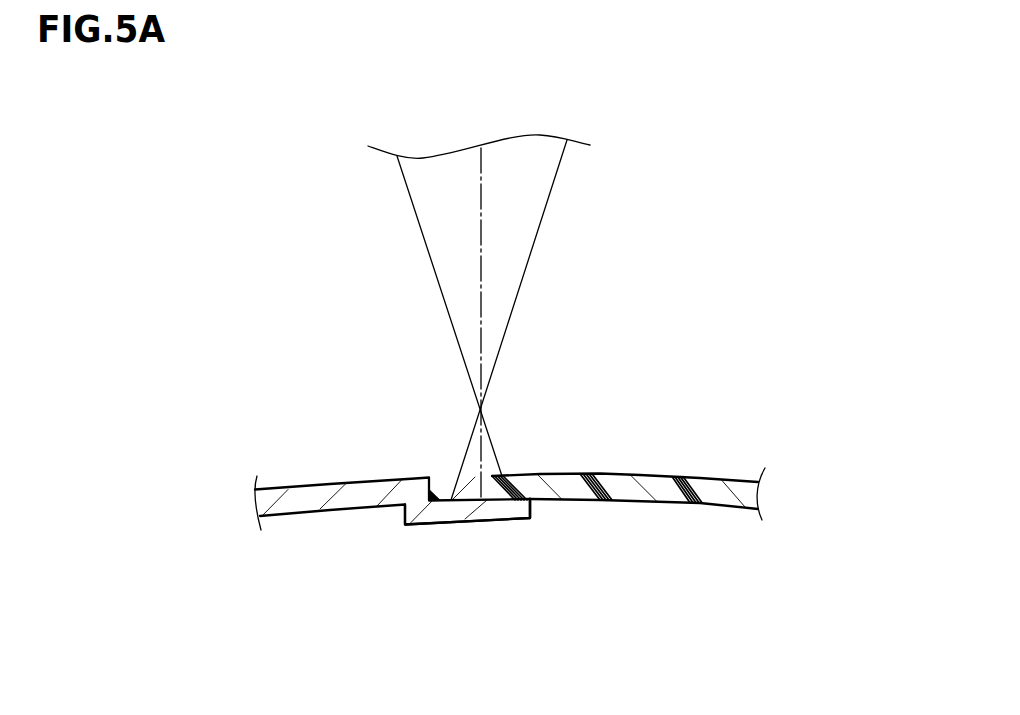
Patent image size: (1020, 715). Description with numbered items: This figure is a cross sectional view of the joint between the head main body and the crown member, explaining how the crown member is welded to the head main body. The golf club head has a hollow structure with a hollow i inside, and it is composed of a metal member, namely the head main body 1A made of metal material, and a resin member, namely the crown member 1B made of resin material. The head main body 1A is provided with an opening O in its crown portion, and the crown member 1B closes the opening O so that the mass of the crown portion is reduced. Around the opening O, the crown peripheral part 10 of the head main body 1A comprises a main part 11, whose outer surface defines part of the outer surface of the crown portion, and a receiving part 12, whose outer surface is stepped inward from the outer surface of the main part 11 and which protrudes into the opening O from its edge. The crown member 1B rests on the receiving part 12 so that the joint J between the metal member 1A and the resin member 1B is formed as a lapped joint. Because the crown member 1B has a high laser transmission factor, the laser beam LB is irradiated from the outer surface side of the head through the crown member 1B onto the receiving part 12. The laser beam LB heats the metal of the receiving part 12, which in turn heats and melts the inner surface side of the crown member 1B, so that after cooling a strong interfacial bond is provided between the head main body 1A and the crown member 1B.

The laser beam LB is at (533, 249).
The head main body 1A is at (314, 400).
The crown member 1B is at (692, 462).
The crown peripheral part 10 is at (155, 270).
The main part 11 is at (312, 483).
The receiving part 12 is at (443, 500).
The joint J is at (455, 537).
The opening O is at (532, 508).
The hollow i is at (633, 613).